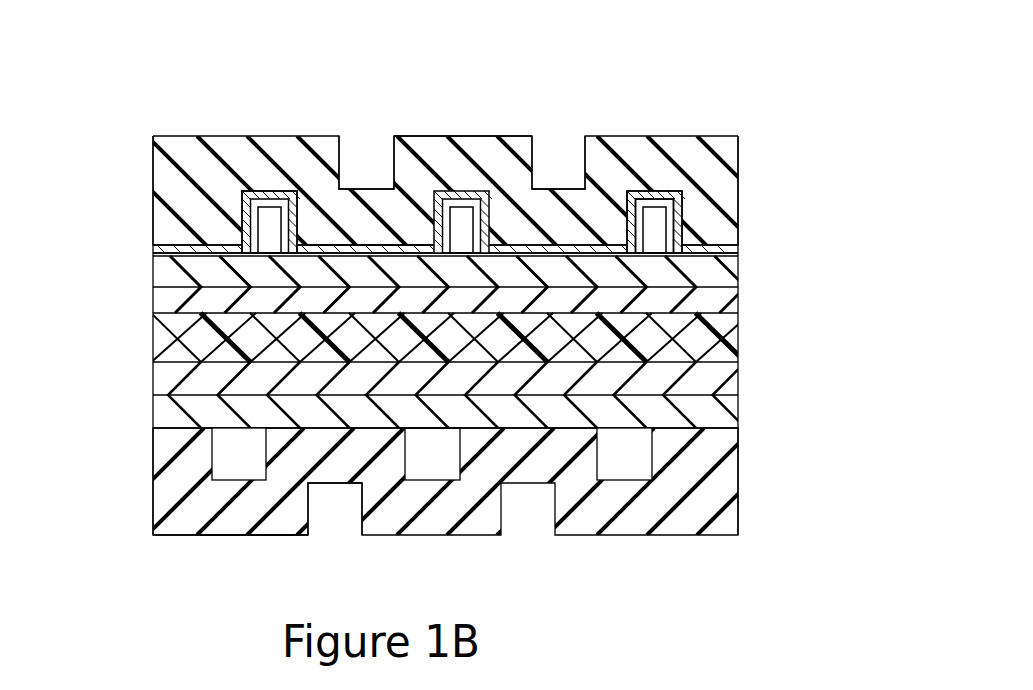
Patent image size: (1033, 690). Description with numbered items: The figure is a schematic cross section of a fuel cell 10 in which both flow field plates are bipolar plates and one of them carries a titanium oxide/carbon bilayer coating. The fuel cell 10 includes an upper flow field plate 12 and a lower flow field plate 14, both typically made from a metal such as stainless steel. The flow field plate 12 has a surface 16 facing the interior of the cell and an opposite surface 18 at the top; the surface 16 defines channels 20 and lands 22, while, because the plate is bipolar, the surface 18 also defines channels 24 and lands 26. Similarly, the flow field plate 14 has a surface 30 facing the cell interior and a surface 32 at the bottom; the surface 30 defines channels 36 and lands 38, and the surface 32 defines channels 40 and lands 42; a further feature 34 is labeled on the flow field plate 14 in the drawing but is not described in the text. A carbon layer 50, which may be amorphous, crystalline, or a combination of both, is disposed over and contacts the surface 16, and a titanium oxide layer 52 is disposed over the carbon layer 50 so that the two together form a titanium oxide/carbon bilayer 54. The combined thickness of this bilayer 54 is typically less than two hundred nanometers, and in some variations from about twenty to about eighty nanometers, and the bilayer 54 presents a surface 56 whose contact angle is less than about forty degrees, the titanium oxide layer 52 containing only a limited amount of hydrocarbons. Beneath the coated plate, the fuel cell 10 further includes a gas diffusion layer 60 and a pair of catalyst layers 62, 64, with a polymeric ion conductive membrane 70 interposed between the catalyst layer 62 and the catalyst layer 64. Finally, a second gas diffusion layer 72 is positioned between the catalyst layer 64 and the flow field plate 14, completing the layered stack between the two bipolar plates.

The fuel cell 10 is at (676, 82).
The flow field plate 12 is at (188, 132).
The flow field plate 14 is at (160, 555).
The surface 16 is at (279, 191).
The surface 18 is at (128, 212).
The channels 20 is at (268, 223).
The lands 22 is at (371, 246).
The channels 24 is at (355, 140).
The lands 26 is at (425, 136).
The surface 30 is at (177, 427).
The surface 32 is at (188, 535).
The contact pad 34 is at (623, 457).
The channels 36 is at (223, 450).
The lands 38 is at (355, 428).
The channels 40 is at (333, 510).
The lands 42 is at (242, 535).
The carbon layer 50 is at (153, 245).
The titanium oxide layer 52 is at (656, 223).
The titanium oxide/carbon bilayer 54 is at (750, 250).
The surface 56 is at (680, 223).
The gas diffusion layer 60 is at (153, 273).
The catalyst layer 62 is at (740, 303).
The catalyst layer 64 is at (740, 378).
The polymeric ion conductive membrane 70 is at (740, 332).
The gas diffusion layer 72 is at (740, 410).